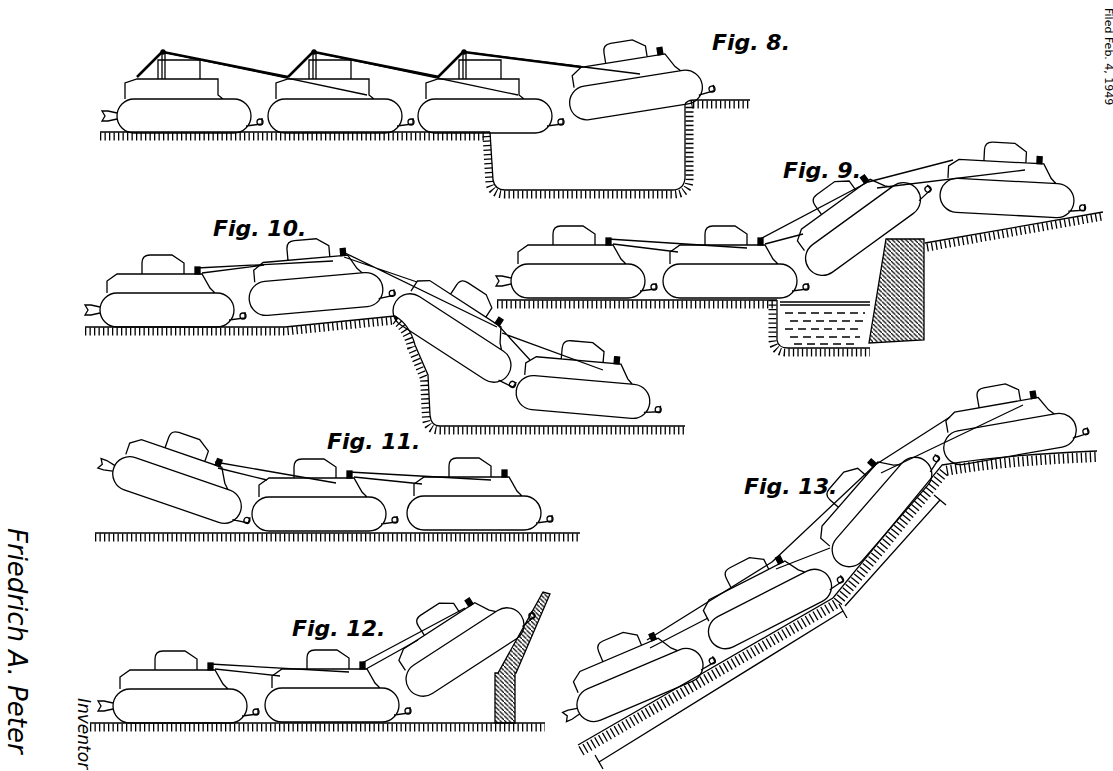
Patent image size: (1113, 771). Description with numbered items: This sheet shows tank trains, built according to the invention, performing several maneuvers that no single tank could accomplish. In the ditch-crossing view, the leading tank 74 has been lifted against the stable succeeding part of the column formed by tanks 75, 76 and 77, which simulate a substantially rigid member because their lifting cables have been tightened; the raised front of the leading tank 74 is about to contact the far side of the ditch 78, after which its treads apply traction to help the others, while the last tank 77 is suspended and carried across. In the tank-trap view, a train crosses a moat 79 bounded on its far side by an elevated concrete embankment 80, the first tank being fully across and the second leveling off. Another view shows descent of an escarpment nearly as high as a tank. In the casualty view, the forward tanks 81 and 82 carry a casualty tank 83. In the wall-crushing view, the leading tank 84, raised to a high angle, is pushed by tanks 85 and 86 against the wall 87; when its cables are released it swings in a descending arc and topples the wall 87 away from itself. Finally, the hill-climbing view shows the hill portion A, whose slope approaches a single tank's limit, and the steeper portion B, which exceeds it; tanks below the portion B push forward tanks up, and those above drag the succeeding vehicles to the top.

In FIG. 8, the leading tank 74 is at (648, 107).
In FIG. 8, the tank 75 is at (501, 124).
In FIG. 8, the tank 76 is at (347, 126).
In FIG. 8, the last tank 77 is at (194, 129).
In FIG. 8, the ditch 78 is at (606, 189).
In FIG. 9, the moat 79 is at (849, 300).
In FIG. 9, the elevated concrete embankment 80 is at (924, 273).
In FIG. 11, the forward tank 81 is at (480, 521).
In FIG. 11, the forward tank 82 is at (328, 523).
In FIG. 11, the casualty tank 83 is at (181, 497).
In FIG. 12, the leading tank 84 is at (476, 667).
In FIG. 12, the tank 85 is at (338, 716).
In FIG. 12, the tank 86 is at (185, 715).
In FIG. 12, the wall 87 is at (538, 632).
In FIG. 13, the hill portion A is at (721, 686).
In FIG. 13, the steep hill portion B is at (895, 550).